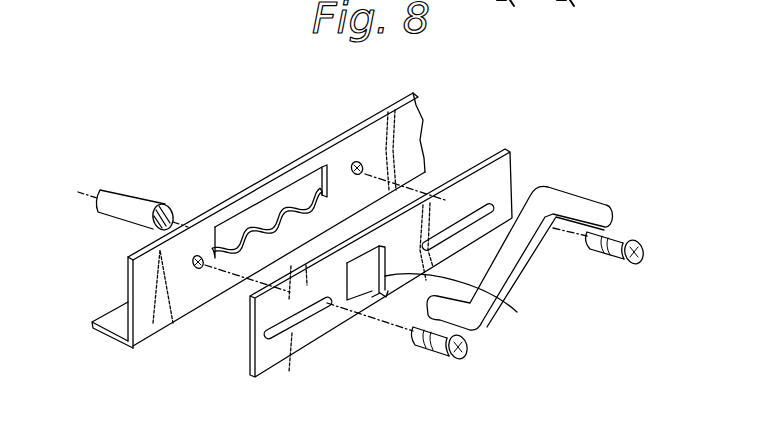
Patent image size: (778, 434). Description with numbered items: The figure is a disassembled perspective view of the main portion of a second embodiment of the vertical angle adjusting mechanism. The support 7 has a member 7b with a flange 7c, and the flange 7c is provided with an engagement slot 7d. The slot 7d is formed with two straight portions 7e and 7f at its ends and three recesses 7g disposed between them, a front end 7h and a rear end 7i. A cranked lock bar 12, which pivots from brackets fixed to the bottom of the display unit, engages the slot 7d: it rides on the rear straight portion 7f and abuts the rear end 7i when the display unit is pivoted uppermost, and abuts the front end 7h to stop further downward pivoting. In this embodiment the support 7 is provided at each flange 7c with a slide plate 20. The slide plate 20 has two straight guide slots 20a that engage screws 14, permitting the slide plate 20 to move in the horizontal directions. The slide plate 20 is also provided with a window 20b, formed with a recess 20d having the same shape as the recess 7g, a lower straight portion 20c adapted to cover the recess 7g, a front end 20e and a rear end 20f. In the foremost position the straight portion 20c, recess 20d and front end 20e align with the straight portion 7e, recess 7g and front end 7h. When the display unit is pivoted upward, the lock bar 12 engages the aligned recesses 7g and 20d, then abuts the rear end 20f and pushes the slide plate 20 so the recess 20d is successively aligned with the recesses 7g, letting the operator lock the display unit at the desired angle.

The support 7 is at (100, 328).
The member 7b is at (108, 344).
The flange 7c is at (127, 277).
The engagement slot 7d is at (295, 190).
The straight portion 7e is at (227, 257).
The straight portion 7f is at (300, 213).
The recess 7g is at (277, 223).
The front end 7h is at (214, 226).
The rear end 7i is at (324, 152).
The lock bar 12 is at (539, 242).
The screw 14 is at (636, 262).
The slide plate 20 is at (260, 374).
The guide slot 20a is at (295, 333).
The window 20b is at (434, 195).
The straight portion 20c is at (357, 296).
The recess 20d is at (383, 298).
The front end 20e is at (353, 281).
The rear end 20f is at (472, 303).